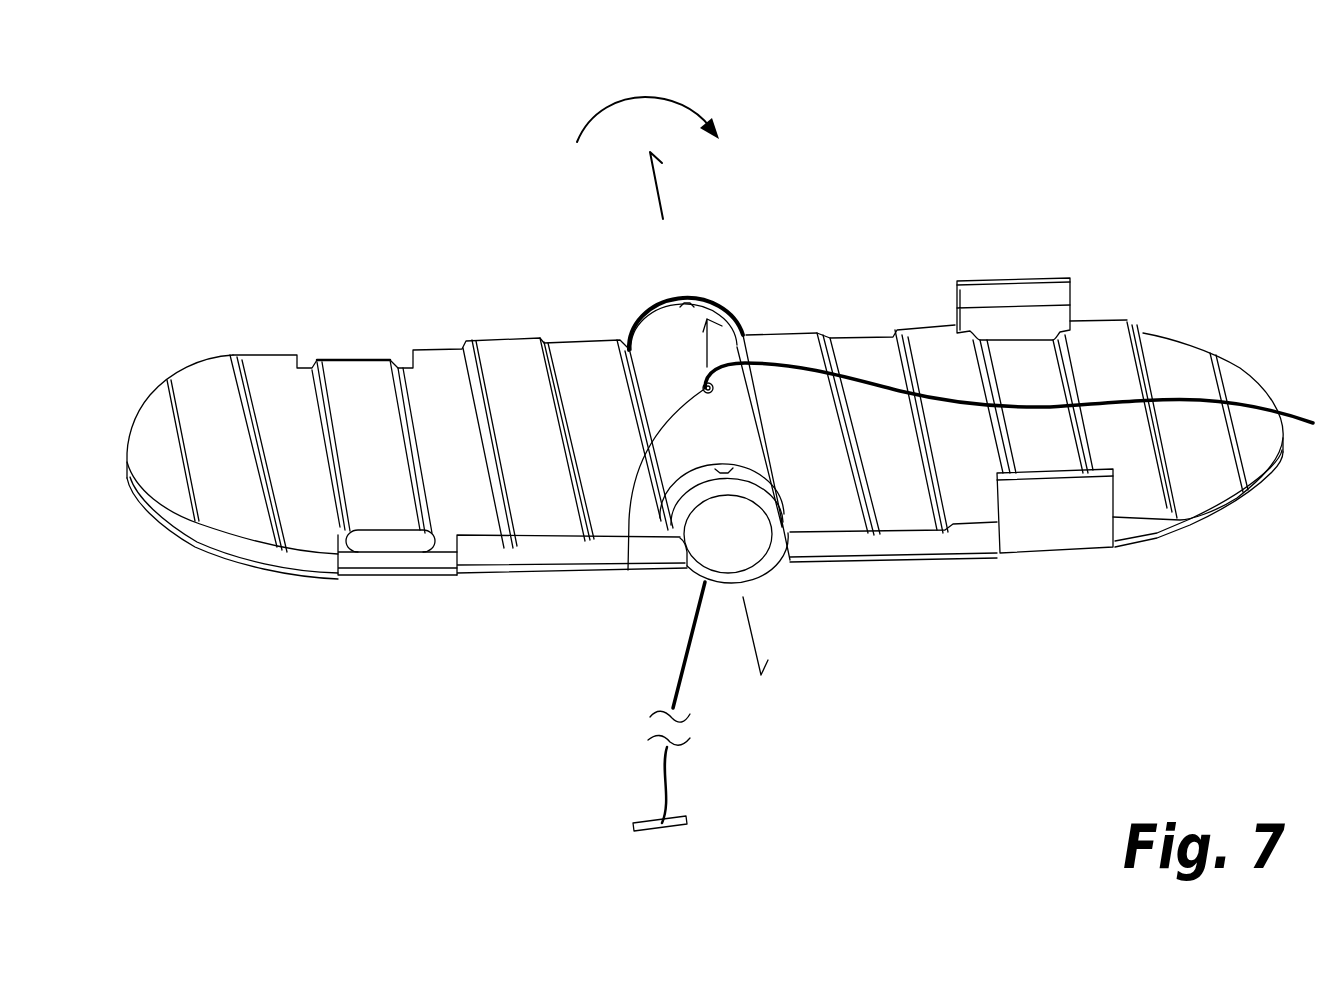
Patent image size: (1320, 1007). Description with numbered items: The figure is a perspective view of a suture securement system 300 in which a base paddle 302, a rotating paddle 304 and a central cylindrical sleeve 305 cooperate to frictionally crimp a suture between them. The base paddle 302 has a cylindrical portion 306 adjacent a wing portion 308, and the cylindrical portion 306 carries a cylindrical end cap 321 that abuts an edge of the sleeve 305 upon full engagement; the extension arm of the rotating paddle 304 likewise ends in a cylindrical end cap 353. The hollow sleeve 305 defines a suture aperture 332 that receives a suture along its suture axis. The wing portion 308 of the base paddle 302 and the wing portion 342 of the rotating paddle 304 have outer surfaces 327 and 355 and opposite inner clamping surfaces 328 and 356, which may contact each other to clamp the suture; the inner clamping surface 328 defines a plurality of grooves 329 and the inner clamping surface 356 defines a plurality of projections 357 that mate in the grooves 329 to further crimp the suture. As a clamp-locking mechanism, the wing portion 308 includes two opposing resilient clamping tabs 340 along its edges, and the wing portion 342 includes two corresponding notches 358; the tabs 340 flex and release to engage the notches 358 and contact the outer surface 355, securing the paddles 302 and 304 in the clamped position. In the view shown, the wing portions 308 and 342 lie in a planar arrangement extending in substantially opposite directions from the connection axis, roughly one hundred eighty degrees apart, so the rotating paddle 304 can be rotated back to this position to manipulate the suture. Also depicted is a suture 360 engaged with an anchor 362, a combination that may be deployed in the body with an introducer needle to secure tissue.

The suture securement system 300 is at (1068, 136).
The base paddle 302 is at (875, 562).
The rotating paddle 304 is at (507, 573).
The central cylindrical sleeve 305 is at (748, 305).
The cylindrical portion 306 is at (705, 295).
The wing portion 308 is at (810, 333).
The cylindrical end cap 321 is at (655, 310).
The outer surface 327 is at (1188, 545).
The inner clamping surface 328 is at (1258, 392).
The grooves 329 is at (1181, 368).
The suture aperture 332 is at (628, 570).
The resilient clamping tabs 340 is at (1047, 280).
The wing portion 342 is at (447, 350).
The cylindrical end cap 353 is at (745, 580).
The outer surface 355 is at (247, 572).
The inner clamping surface 356 is at (218, 395).
The projections 357 is at (507, 338).
The notches 358 is at (400, 358).
The suture 360 is at (672, 786).
The anchor 362 is at (690, 830).